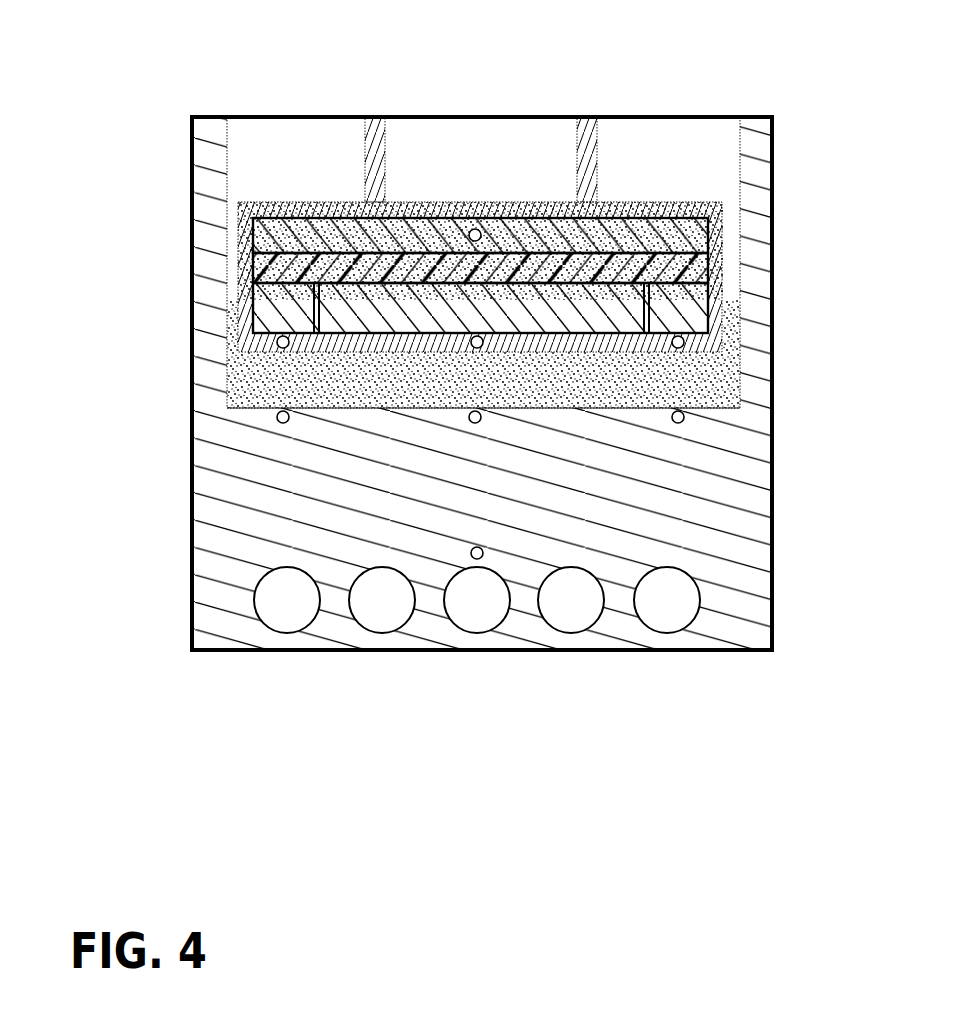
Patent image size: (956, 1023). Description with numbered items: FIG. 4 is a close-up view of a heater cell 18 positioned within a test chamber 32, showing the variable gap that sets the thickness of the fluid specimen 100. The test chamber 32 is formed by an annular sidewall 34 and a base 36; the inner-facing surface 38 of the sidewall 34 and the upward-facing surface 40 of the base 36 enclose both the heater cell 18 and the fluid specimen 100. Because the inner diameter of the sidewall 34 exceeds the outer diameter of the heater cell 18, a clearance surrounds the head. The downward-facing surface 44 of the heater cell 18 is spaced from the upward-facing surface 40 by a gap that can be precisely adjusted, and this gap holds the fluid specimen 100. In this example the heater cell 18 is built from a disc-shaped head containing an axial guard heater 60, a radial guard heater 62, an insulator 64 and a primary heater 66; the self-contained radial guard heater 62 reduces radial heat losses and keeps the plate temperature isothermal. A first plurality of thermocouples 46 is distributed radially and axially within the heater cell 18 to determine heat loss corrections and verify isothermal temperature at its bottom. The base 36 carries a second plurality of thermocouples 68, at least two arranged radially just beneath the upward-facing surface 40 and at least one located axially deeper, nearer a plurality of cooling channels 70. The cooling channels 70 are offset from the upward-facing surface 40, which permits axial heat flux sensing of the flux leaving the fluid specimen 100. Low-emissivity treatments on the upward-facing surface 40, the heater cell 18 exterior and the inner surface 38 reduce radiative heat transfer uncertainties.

The heater cell 18 is at (728, 256).
The test chamber 32 is at (163, 339).
The annular sidewall 34 is at (192, 177).
The base 36 is at (698, 512).
The inner-facing surface 38 is at (228, 370).
The upward-facing surface 40 is at (693, 410).
The downward-facing surface 44 is at (545, 405).
The first plurality of thermocouples 46 is at (283, 336).
The axial guard heater 60 is at (443, 217).
The radial guard heater 62 is at (396, 416).
The insulator 64 is at (253, 268).
The primary heater 66 is at (357, 317).
The second plurality of thermocouples 68 is at (278, 418).
The cooling channels 70 is at (458, 614).
The fluid specimen 100 is at (660, 365).